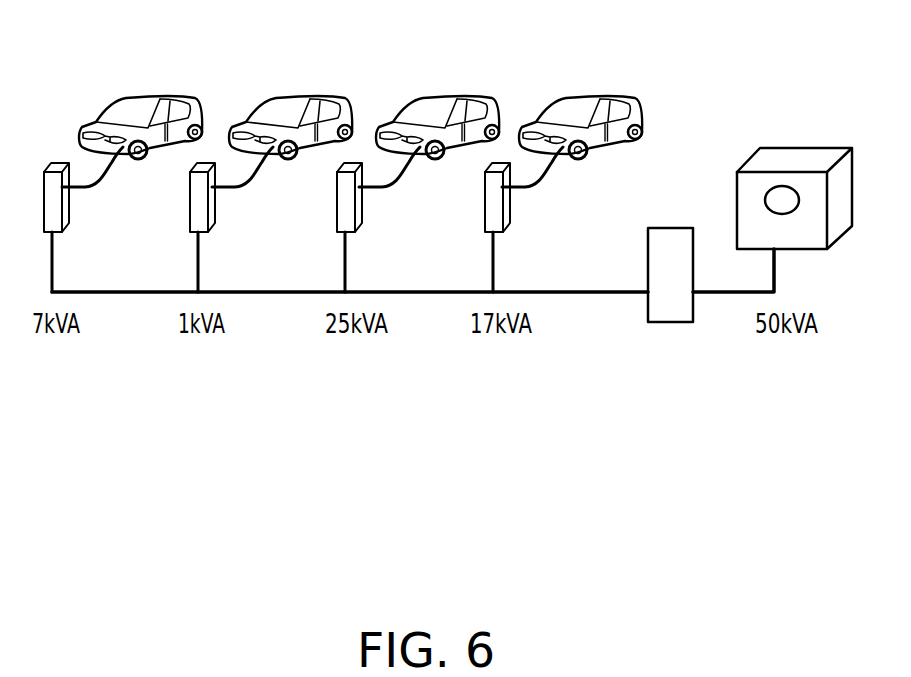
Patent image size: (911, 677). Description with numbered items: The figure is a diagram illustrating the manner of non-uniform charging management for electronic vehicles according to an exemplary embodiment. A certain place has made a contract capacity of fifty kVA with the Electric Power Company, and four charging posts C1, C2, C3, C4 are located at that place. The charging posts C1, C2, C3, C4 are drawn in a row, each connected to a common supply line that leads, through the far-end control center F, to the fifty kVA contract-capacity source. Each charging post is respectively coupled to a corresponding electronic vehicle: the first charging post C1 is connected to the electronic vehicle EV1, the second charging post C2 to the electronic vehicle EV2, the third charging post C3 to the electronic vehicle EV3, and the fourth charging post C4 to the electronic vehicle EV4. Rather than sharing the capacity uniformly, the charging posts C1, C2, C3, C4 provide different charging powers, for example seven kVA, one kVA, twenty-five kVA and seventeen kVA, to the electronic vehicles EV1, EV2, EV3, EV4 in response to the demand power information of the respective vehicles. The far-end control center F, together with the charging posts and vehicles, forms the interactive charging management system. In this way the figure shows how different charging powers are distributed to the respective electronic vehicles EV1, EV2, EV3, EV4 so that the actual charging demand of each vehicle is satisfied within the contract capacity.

The electronic vehicle EV1 is at (164, 95).
The electronic vehicle EV2 is at (311, 94).
The electronic vehicle EV3 is at (458, 96).
The electronic vehicle EV4 is at (622, 94).
The charging post C1 is at (66, 207).
The charging post C2 is at (212, 207).
The charging post C3 is at (359, 207).
The charging post C4 is at (507, 207).
The far-end control center F is at (664, 228).